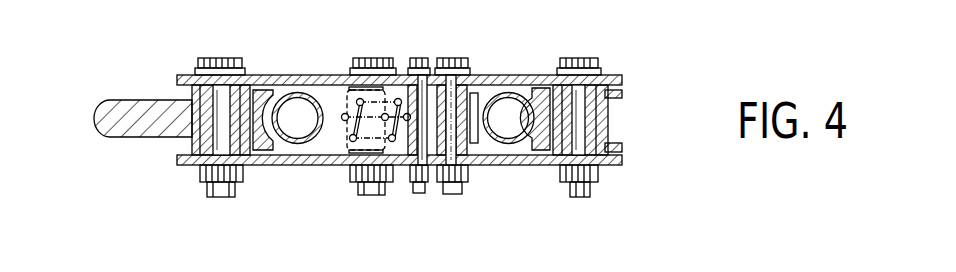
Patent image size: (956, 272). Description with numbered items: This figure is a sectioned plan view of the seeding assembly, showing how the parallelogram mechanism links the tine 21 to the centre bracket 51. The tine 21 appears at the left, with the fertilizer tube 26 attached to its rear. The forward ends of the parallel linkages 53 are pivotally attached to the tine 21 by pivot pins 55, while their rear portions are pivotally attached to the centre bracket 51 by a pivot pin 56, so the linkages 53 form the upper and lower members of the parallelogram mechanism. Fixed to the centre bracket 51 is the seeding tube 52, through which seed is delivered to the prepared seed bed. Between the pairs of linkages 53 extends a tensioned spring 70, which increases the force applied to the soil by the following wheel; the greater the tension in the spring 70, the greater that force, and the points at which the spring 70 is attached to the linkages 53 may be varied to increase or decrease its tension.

The tine 21 is at (128, 136).
The fertilizer tube 26 is at (308, 75).
The centre bracket 51 is at (610, 116).
The seeding tube 52 is at (492, 75).
The parallel linkages 53 is at (333, 75).
The pivot pins 55 is at (221, 58).
The pivot pin 56 is at (600, 62).
The tensioned spring 70 is at (405, 122).